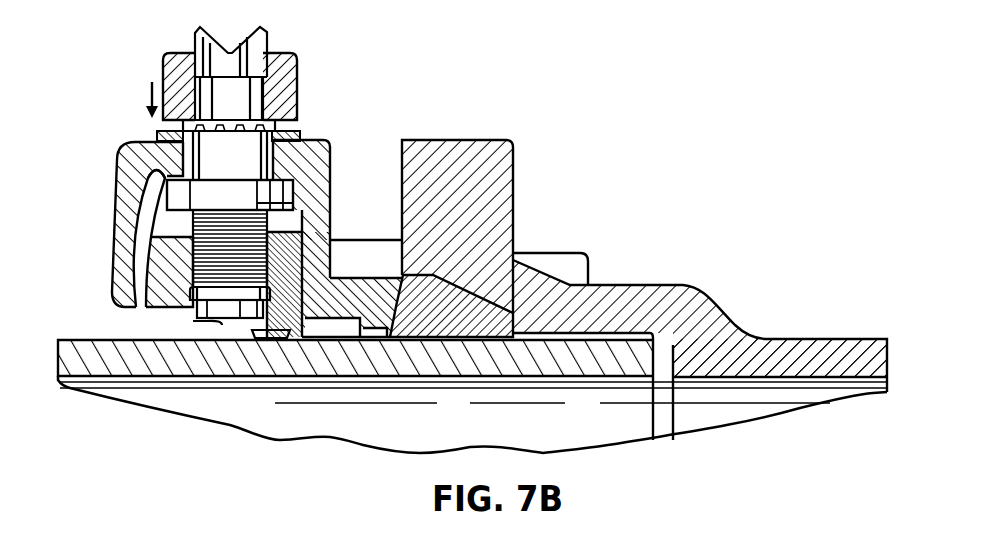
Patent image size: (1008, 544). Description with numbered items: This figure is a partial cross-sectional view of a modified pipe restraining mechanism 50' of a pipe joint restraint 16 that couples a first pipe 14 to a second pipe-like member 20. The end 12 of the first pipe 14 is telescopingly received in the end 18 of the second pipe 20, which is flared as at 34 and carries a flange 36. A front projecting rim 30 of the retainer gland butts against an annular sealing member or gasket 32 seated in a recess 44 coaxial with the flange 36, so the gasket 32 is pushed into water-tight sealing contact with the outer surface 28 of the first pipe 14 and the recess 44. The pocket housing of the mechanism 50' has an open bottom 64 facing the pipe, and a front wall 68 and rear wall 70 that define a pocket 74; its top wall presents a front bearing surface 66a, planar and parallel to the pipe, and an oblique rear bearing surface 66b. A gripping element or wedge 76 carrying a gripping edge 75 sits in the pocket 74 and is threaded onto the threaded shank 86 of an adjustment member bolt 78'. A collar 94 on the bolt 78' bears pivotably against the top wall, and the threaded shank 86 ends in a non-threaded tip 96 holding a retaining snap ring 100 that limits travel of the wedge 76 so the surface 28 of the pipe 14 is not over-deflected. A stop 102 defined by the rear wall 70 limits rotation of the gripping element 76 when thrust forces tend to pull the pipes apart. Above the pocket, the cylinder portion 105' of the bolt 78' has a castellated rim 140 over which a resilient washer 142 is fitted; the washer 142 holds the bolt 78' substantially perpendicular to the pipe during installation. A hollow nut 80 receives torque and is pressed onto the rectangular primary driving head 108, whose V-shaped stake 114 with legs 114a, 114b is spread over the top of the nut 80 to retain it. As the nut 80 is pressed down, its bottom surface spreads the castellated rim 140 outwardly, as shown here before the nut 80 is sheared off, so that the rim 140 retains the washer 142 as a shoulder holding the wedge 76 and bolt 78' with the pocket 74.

The end of first pipe 12 is at (634, 378).
The first pipe 14 is at (58, 357).
The pipe joint restraint 16 is at (377, 113).
The end of second pipe-like member 18 is at (629, 281).
The second pipe-like member 20 is at (826, 339).
The outer surface of first pipe 28 is at (84, 340).
The front projecting rim 30 is at (363, 278).
The annular sealing member 32 is at (456, 282).
The flared portion 34 is at (617, 334).
The flange 36 is at (478, 139).
The recess 44 is at (511, 302).
The pipe restraining mechanism 50' is at (82, 201).
The open bottom 64 is at (144, 311).
The front bearing surface 66a is at (300, 193).
The rear bearing surface 66b is at (132, 170).
The front wall 68 is at (331, 166).
The rear wall 70 is at (112, 270).
The pocket 74 is at (133, 253).
The gripping edge 75 is at (240, 319).
The gripping element 76 is at (120, 294).
The adjustment member bolt 78' is at (124, 238).
The hollow nut 80 is at (163, 65).
The threaded shank portion 86 is at (172, 236).
The collar 94 is at (290, 199).
The non-threaded tip 96 is at (222, 319).
The retaining snap ring 100 is at (207, 322).
The stop 102 is at (152, 170).
The cylinder portion 105' is at (139, 119).
The primary driving head 108 is at (297, 65).
The V-shaped stake 114 is at (229, 50).
The leg of V-shaped stake 114a is at (195, 33).
The leg of V-shaped stake 114b is at (268, 31).
The castellated rim 140 is at (263, 115).
The resilient washer 142 is at (300, 134).